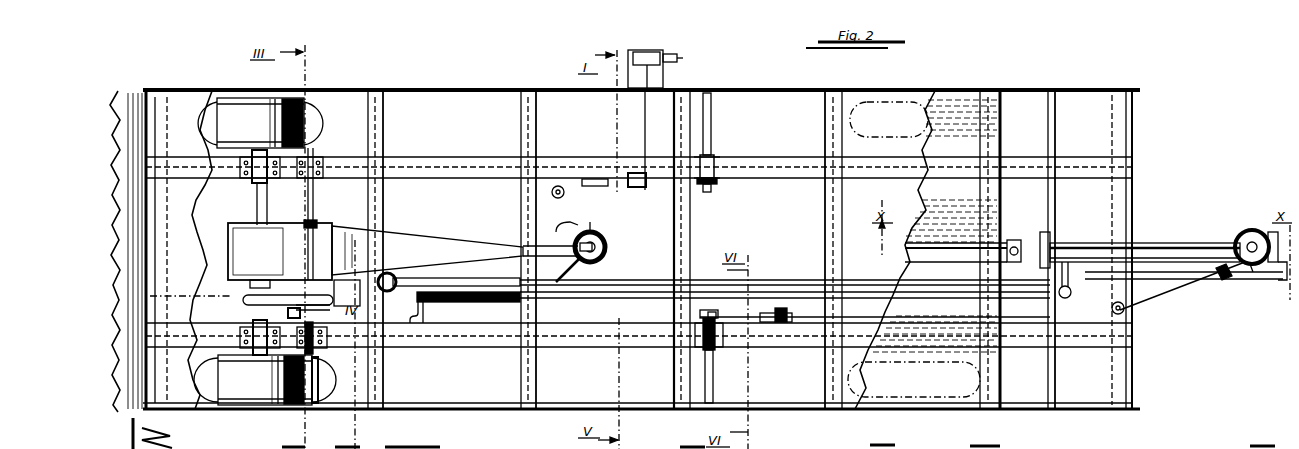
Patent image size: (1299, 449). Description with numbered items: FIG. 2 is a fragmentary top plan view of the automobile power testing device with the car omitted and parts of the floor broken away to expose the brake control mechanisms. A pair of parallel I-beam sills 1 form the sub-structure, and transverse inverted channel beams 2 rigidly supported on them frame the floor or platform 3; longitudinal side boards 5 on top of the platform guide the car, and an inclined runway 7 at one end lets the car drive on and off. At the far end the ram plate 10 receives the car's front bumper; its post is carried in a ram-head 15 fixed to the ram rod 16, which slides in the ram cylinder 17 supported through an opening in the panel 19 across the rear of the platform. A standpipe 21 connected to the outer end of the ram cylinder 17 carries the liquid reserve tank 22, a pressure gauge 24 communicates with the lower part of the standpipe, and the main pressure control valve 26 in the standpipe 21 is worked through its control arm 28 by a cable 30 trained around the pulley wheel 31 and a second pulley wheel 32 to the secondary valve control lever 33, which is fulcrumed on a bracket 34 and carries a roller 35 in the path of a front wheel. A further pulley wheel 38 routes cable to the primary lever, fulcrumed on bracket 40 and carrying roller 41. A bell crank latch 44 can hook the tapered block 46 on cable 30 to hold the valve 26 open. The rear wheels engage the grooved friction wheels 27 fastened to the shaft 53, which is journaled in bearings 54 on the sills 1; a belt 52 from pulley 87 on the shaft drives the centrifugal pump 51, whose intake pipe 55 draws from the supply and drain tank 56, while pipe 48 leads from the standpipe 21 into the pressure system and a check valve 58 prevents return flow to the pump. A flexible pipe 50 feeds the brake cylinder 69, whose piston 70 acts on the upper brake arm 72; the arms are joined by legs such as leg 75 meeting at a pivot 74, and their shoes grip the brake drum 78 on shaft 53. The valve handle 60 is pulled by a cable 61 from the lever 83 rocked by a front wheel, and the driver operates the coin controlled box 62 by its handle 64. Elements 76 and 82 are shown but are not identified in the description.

The I-beams or sills 1 is at (790, 178).
The inverted channel beams 2 is at (712, 115).
The floor or platform 3 is at (1100, 395).
The flanges or side boards 5 is at (1030, 91).
The inclined runway 7 is at (133, 100).
The ram plate 10 is at (1002, 200).
The ram-head 15 is at (1010, 240).
The ram rod 16 is at (1030, 254).
The ram cylinder 17 is at (1158, 243).
The panel or board 19 is at (1052, 150).
The standpipe 21 is at (243, 110).
The liquid reserve tank 22 is at (1252, 230).
The pressure gauge 24 is at (1042, 268).
The main pressure control valve 26 is at (1060, 250).
The friction wheels 27 is at (262, 385).
The valve control lever or arm 28 is at (1250, 272).
The cable 30 is at (1180, 290).
The pulley wheel 31 is at (1214, 270).
The second pulley wheel 32 is at (712, 310).
The secondary valve control lever 33 is at (696, 340).
The bracket 34 is at (716, 340).
The roller 35 is at (718, 395).
The pulley wheel 38 is at (285, 313).
The bracket 40 is at (318, 348).
The roller 41 is at (315, 392).
The angled trip or bell crank latch 44 is at (776, 307).
The tapered stop or block 46 is at (790, 313).
The pipe 48 is at (1268, 280).
The pipe of flexible material 50 is at (566, 269).
The centrifugal pump 51 is at (308, 305).
The belt 52 is at (250, 292).
The shaft 53 is at (256, 200).
The bearings 54 is at (268, 172).
The pipe 55 is at (424, 314).
The fluid supply and drain tank 56 is at (484, 280).
The check valve 58 is at (380, 278).
The handle 60 is at (347, 293).
The cable 61 is at (645, 101).
The coin controlled box 62 is at (636, 52).
The control lever or handle 64 is at (678, 56).
The brake cylinder 69 is at (584, 220).
The piston 70 is at (606, 250).
The upper brake arm 72 is at (420, 236).
The pivot 74 is at (314, 203).
The leg 75 is at (312, 160).
The collar 76 is at (316, 224).
The brake drum 78 is at (240, 248).
The bracket 82 is at (608, 186).
The lever 83 is at (713, 148).
The pulley 87 is at (243, 298).